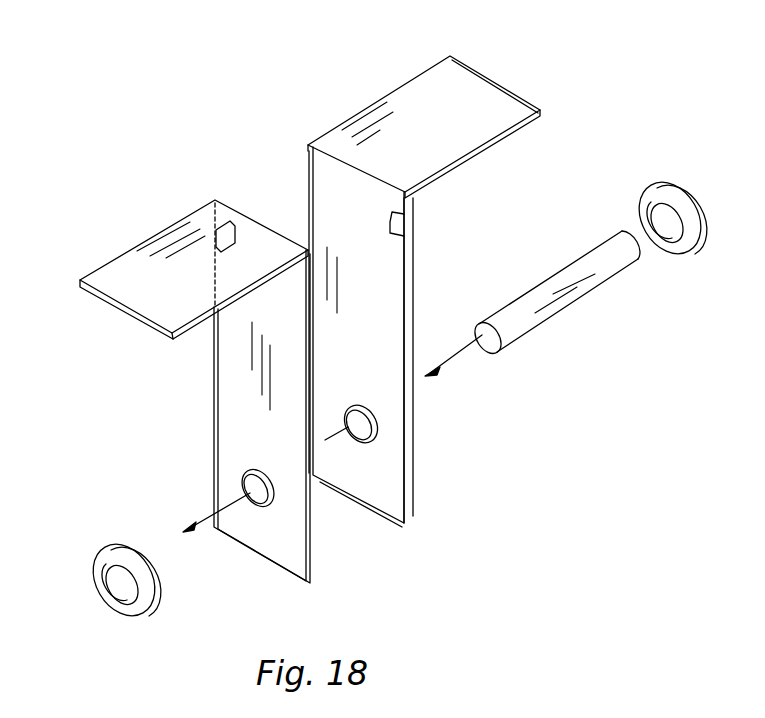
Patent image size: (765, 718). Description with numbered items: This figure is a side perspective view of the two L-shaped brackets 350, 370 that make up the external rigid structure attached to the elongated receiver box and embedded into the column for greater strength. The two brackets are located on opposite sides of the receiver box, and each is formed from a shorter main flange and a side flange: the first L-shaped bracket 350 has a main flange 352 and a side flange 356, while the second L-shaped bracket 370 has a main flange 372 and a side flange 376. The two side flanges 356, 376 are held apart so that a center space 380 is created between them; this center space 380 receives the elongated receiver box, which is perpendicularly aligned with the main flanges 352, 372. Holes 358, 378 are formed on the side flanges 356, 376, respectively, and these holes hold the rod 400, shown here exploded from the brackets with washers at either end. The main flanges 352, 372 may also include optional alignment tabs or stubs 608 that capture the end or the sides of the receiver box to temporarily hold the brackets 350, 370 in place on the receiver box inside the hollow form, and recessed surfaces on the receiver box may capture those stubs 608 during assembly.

The L-shaped bracket 350 is at (139, 204).
The main flange 352 is at (124, 268).
The side flange 356 is at (228, 420).
The hole 358 is at (243, 480).
The L-shaped bracket 370 is at (367, 83).
The main flange 372 is at (437, 91).
The side flange 376 is at (403, 283).
The hole 378 is at (363, 443).
The center space 380 is at (354, 524).
The rod 400 is at (583, 297).
The slot 608 is at (233, 226).